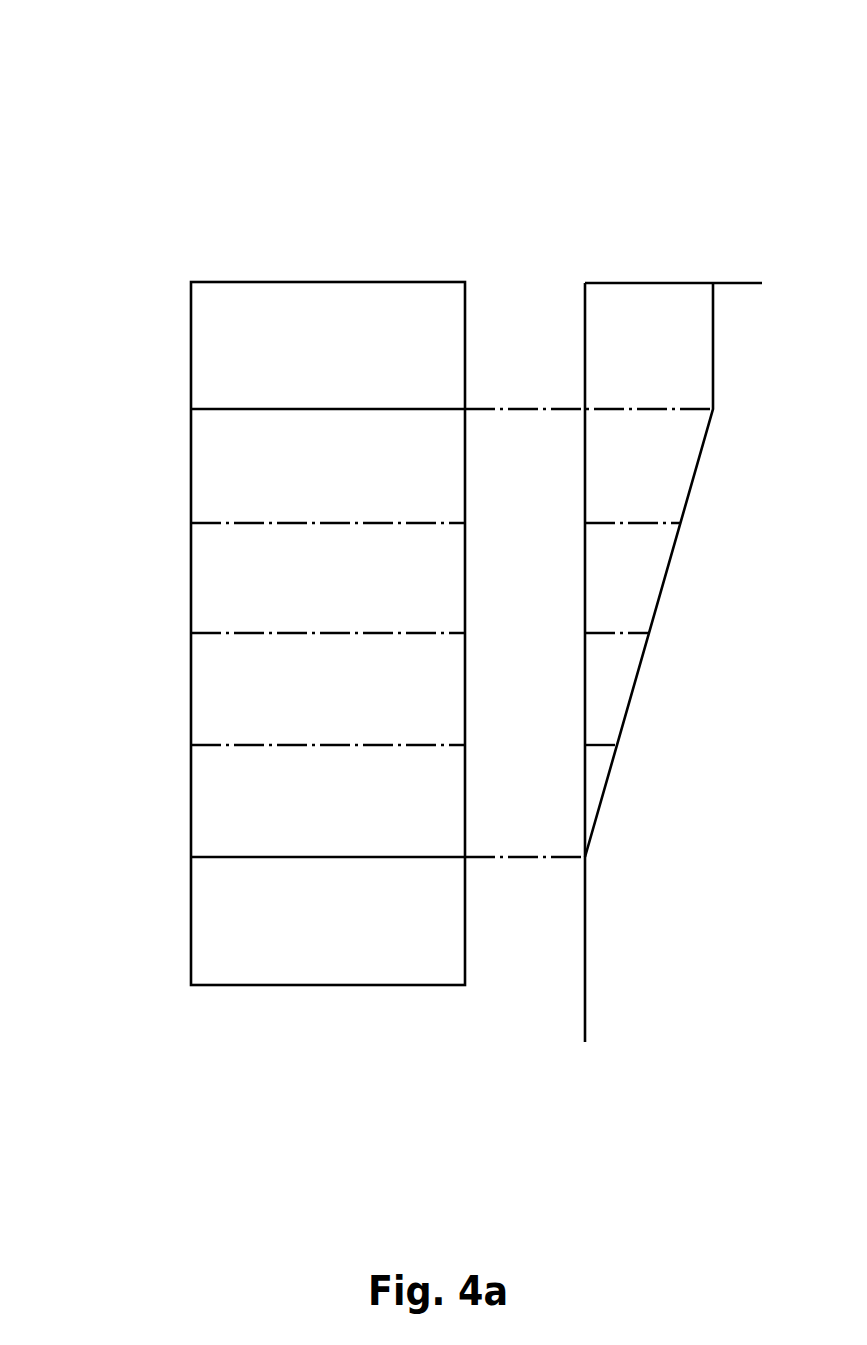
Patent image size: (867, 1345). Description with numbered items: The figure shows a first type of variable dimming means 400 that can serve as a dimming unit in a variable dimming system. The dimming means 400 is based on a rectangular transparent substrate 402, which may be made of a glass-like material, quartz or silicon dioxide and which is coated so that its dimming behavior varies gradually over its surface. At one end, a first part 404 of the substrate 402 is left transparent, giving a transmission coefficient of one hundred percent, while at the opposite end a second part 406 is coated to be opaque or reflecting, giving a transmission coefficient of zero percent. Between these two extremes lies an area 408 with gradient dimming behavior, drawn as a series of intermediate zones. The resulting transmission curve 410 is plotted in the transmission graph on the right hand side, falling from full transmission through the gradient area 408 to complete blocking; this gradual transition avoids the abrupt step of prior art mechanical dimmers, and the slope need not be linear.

The variable dimming means 400 is at (403, 527).
The transparent substrate 402 is at (190, 300).
The first part 404 is at (212, 375).
The second part 406 is at (210, 955).
The area with gradient dimming behavior 408 is at (240, 602).
The transmission curve 410 is at (635, 682).